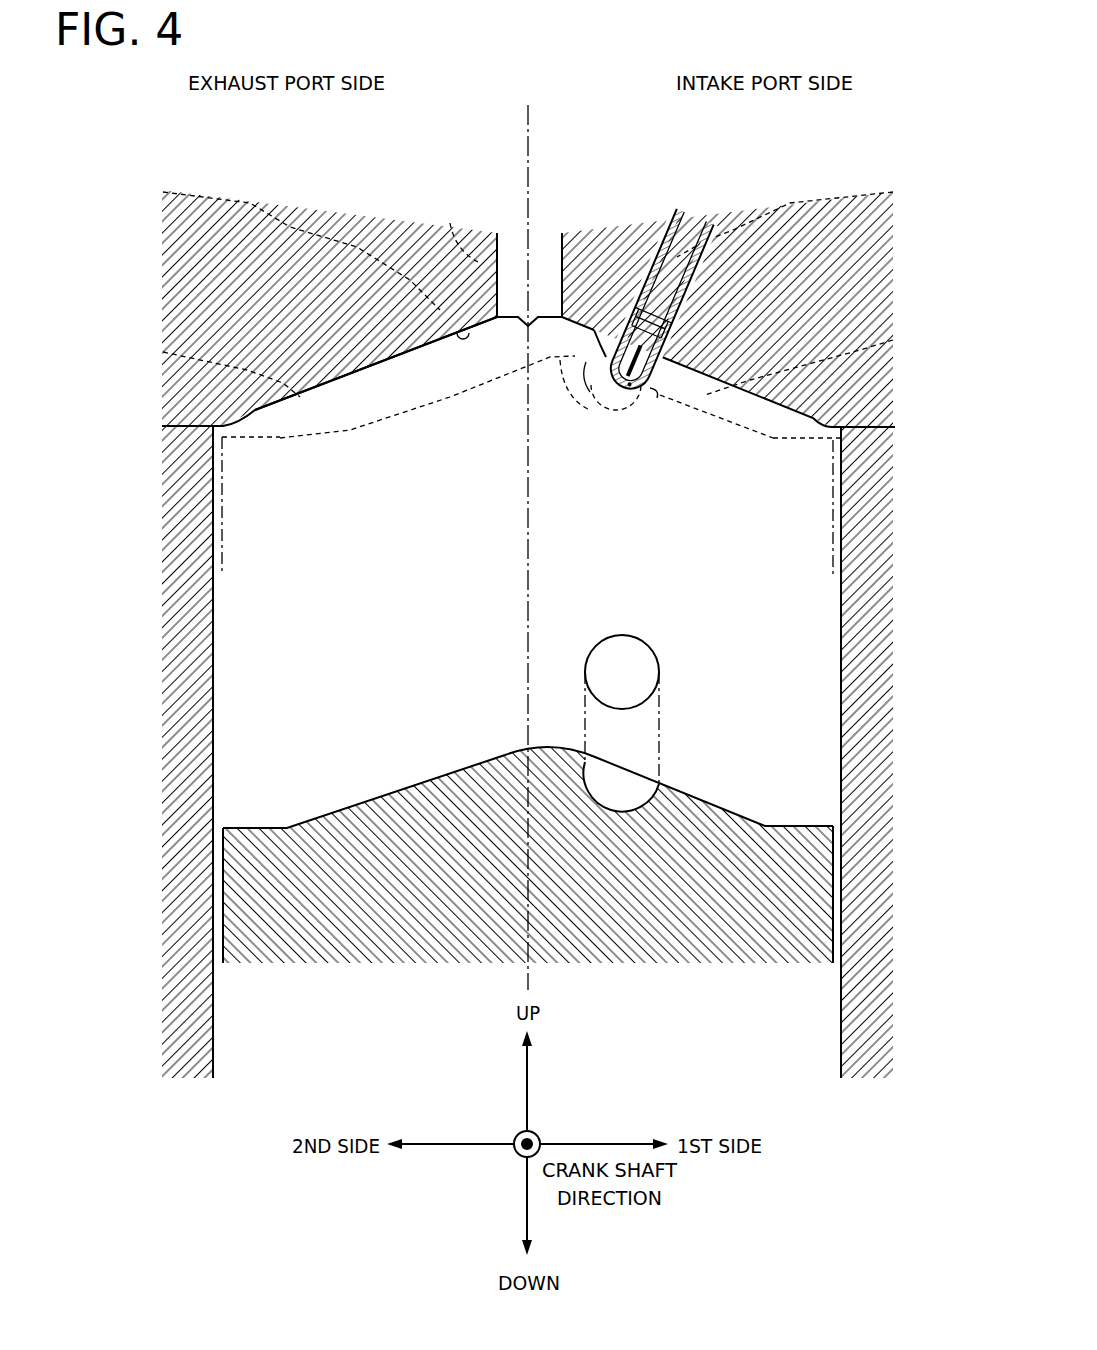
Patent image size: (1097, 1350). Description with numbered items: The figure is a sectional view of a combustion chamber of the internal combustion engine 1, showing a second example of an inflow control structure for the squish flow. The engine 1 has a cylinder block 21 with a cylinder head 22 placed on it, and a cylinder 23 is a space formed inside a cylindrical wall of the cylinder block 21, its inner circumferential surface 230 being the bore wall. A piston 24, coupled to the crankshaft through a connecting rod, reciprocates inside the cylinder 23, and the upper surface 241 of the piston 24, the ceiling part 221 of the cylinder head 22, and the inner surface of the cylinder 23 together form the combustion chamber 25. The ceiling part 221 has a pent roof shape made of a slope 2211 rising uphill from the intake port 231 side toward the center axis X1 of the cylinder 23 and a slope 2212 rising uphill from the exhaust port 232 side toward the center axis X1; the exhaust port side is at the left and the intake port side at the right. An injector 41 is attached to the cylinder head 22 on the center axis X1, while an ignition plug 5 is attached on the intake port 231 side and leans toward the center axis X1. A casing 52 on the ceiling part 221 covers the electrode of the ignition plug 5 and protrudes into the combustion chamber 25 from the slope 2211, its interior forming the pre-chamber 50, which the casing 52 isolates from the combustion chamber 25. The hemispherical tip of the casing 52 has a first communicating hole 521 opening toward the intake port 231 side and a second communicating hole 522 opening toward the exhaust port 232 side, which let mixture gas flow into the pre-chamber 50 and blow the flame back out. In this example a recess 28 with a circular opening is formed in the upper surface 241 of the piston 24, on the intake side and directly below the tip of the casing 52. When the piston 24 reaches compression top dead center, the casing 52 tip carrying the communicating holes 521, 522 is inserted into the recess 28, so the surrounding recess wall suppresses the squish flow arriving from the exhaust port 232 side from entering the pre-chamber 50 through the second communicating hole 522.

The internal combustion engine 1 is at (917, 160).
The ignition plug 5 is at (648, 250).
The cylinder block 21 is at (190, 686).
The cylinder head 22 is at (190, 384).
The cylinder 23 is at (841, 650).
The piston 24 is at (848, 527).
The combustion chamber 25 is at (456, 602).
The recess 28 is at (648, 777).
The injector 41 is at (490, 268).
The pre-chamber 50 is at (612, 420).
The casing 52 is at (603, 275).
The ceiling part 221 is at (457, 333).
The cylinder inner surface 230 is at (837, 692).
The intake port 231 is at (787, 215).
The exhaust port 232 is at (268, 225).
The upper surface 241 is at (250, 828).
The first communicating hole 521 is at (640, 398).
The second communicating hole 522 is at (590, 390).
The slope 2211 is at (843, 450).
The slope 2212 is at (243, 443).
The center axis X1 is at (535, 125).